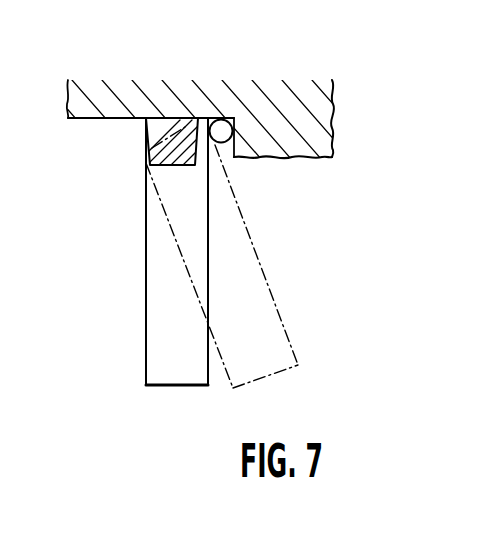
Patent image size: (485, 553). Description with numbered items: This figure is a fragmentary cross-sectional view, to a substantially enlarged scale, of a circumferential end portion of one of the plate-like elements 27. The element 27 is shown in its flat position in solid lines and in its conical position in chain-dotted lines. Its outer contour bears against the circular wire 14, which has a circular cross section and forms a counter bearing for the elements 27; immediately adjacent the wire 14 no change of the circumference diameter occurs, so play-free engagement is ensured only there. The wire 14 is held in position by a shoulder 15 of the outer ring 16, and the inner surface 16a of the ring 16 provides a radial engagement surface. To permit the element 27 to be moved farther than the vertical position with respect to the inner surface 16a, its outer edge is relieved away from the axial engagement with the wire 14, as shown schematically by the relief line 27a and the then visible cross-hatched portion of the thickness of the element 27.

The circular wire 14 is at (229, 146).
The shoulder 15 is at (334, 132).
The outer ring 16 is at (108, 88).
The inner surface 16a is at (93, 119).
The plate-like element 27 is at (167, 340).
The relief line 27a is at (146, 168).